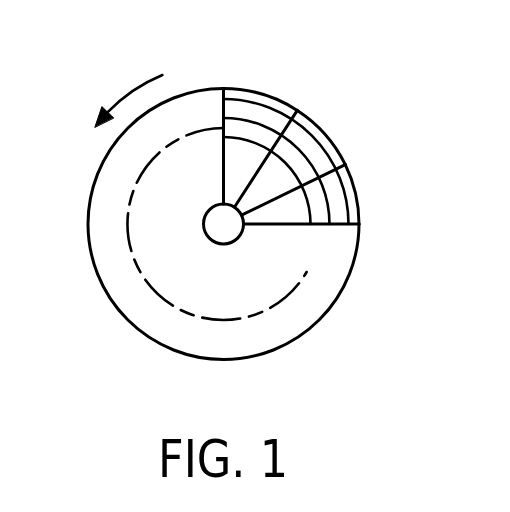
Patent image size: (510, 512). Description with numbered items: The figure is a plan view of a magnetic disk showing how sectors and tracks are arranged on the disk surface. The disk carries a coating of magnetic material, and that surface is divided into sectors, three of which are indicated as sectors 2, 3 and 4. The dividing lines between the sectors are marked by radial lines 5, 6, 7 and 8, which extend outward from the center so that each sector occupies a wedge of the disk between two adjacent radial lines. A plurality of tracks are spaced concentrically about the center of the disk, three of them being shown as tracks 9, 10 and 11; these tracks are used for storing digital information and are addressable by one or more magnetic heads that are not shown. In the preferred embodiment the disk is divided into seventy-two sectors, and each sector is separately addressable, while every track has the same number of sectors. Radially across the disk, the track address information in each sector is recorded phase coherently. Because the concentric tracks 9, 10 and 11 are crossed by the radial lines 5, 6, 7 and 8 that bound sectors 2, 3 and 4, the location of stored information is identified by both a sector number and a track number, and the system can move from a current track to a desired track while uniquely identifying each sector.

The sector 2 is at (253, 98).
The sector 3 is at (326, 149).
The sector 4 is at (349, 204).
The radial line 5 is at (222, 107).
The radial line 6 is at (306, 112).
The radial line 7 is at (338, 173).
The radial line 8 is at (355, 226).
The track 9 is at (293, 203).
The track 10 is at (318, 203).
The track 11 is at (332, 200).